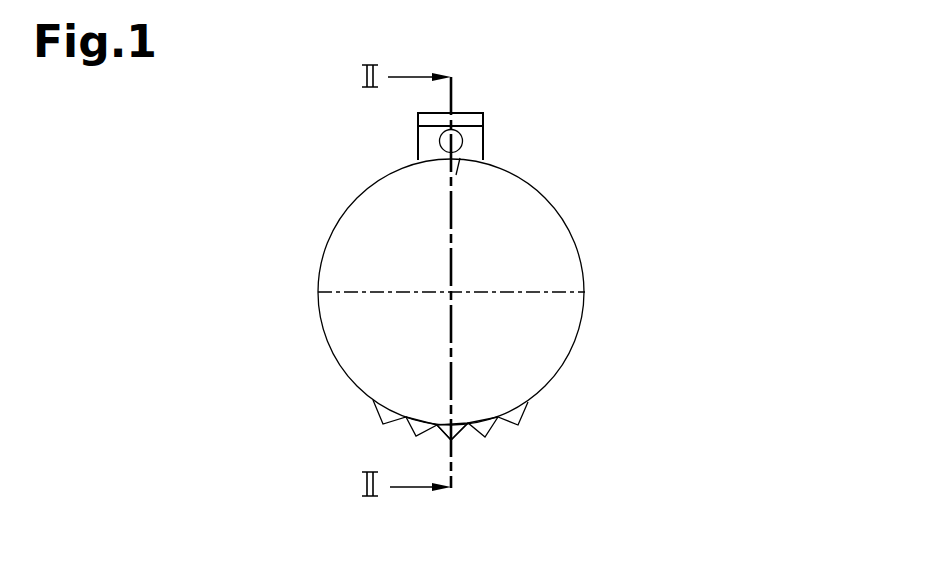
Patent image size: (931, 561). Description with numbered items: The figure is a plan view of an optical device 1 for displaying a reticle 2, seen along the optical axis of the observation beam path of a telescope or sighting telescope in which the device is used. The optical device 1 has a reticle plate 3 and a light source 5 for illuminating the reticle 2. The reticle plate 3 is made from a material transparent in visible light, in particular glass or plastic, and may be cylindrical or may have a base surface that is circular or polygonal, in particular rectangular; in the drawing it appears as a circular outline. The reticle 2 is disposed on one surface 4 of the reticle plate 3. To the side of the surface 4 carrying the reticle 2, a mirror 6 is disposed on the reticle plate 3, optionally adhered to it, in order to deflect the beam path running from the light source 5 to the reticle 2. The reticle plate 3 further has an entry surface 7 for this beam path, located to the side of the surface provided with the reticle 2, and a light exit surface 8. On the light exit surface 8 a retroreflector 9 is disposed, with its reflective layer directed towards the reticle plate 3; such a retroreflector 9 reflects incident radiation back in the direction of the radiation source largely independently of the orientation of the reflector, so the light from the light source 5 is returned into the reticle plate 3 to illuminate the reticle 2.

The optical device 1 is at (600, 265).
The reticle 2 is at (451, 292).
The reticle plate 3 is at (552, 343).
The surface 4 is at (425, 354).
The light source 5 is at (440, 138).
The mirror 6 is at (483, 133).
The entry surface 7 is at (460, 160).
The light exit surface 8 is at (463, 410).
The retroreflector 9 is at (486, 449).